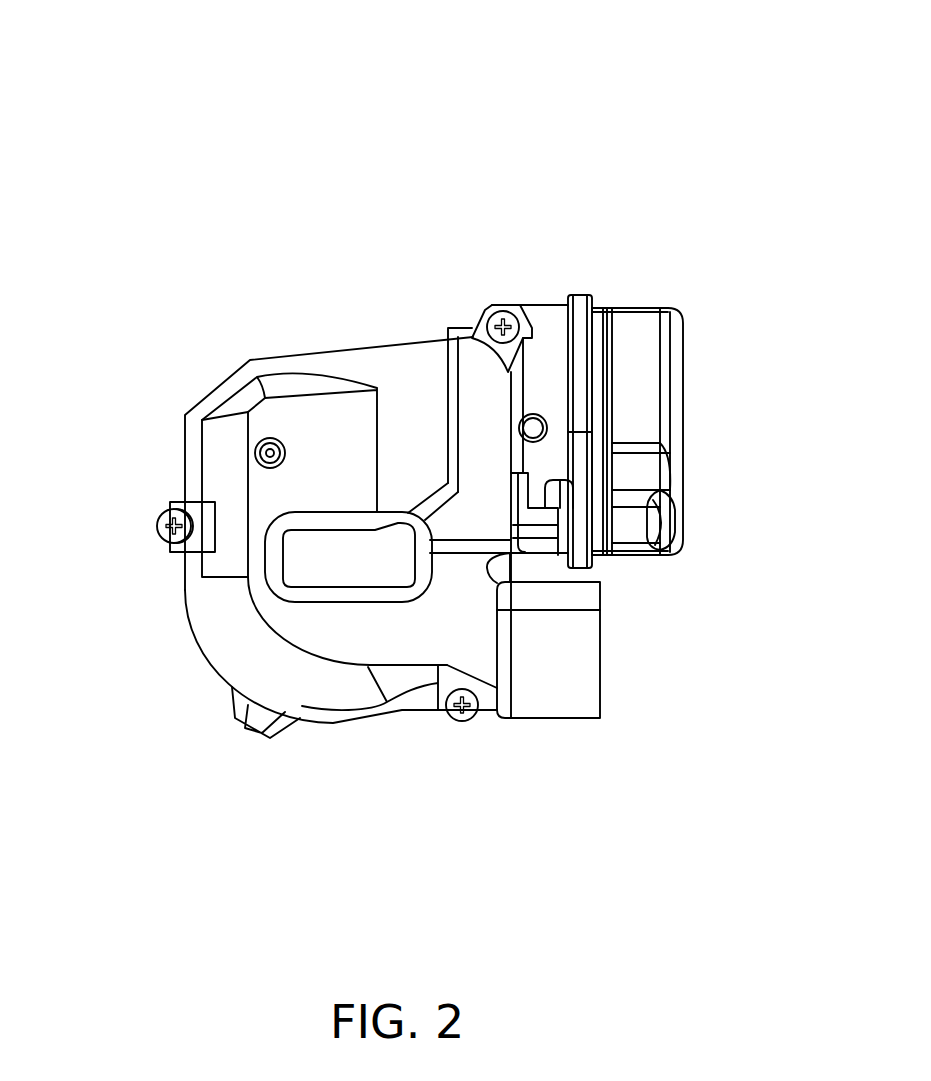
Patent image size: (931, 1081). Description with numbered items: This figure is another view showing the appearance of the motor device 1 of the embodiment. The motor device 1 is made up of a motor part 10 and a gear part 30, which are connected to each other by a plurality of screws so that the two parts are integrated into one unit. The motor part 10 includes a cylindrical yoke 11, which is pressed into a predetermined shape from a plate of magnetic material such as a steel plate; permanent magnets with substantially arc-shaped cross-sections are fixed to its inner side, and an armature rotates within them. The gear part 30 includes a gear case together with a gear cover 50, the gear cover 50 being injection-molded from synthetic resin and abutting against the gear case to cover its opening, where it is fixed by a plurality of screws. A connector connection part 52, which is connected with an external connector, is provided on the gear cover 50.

The motor device 1 is at (160, 168).
The motor part 10 is at (682, 293).
The yoke 11 is at (550, 305).
The gear part 30 is at (195, 692).
The gear cover 50 is at (345, 702).
The connector connection part 52 is at (600, 660).